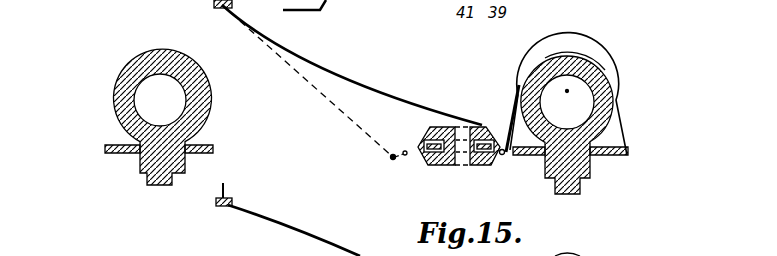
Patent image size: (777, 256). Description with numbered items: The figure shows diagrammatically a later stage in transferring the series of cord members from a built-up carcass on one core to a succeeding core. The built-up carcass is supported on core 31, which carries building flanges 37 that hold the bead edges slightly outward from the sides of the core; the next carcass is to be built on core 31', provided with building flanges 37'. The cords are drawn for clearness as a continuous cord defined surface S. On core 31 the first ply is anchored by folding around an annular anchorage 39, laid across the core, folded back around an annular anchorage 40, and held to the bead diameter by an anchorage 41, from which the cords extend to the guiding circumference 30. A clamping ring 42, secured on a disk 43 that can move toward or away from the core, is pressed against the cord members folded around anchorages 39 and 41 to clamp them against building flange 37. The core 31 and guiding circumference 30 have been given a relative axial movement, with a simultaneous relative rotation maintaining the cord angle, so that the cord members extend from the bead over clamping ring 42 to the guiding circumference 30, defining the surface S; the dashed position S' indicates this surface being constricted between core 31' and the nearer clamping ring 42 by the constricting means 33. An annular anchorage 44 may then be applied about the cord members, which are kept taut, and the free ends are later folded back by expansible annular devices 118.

The guiding circumference 30 is at (220, 9).
The core 31 is at (586, 125).
The core 31' is at (143, 117).
The constricting means 33 is at (390, 159).
The building flanges 37 is at (570, 173).
The building flanges 37' is at (171, 168).
The annular anchorage 39 is at (508, 156).
The annular anchorage 40 is at (628, 156).
The anchorage 41 is at (502, 156).
The clamping ring 42 is at (426, 160).
The disk 43 is at (462, 158).
The annular anchorage 44 is at (404, 151).
The expansible annular devices 118 is at (424, 132).
The cord defined surface S is at (352, 130).
The strap (alternate position) S' is at (307, 81).